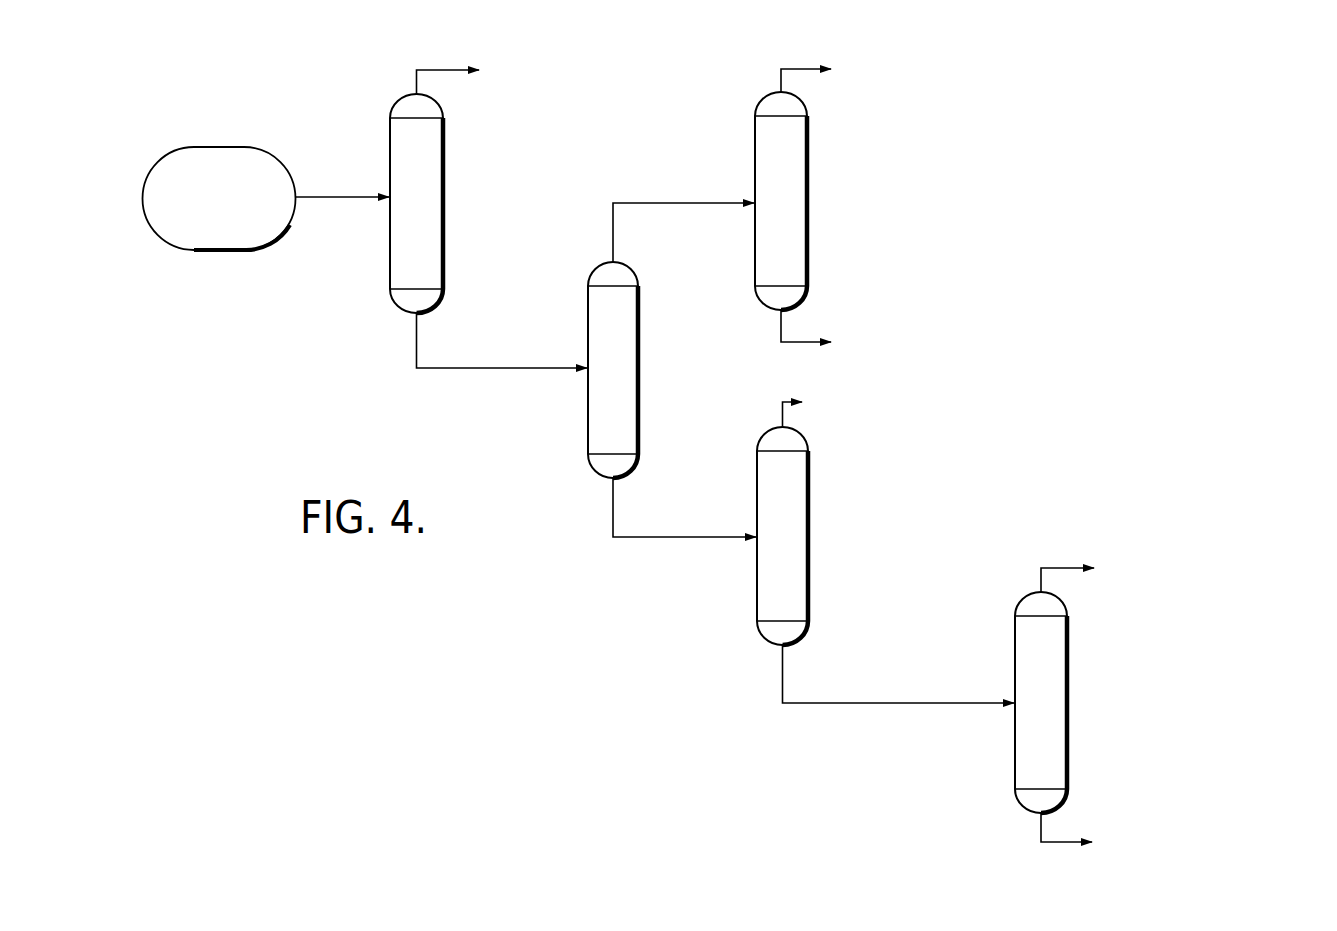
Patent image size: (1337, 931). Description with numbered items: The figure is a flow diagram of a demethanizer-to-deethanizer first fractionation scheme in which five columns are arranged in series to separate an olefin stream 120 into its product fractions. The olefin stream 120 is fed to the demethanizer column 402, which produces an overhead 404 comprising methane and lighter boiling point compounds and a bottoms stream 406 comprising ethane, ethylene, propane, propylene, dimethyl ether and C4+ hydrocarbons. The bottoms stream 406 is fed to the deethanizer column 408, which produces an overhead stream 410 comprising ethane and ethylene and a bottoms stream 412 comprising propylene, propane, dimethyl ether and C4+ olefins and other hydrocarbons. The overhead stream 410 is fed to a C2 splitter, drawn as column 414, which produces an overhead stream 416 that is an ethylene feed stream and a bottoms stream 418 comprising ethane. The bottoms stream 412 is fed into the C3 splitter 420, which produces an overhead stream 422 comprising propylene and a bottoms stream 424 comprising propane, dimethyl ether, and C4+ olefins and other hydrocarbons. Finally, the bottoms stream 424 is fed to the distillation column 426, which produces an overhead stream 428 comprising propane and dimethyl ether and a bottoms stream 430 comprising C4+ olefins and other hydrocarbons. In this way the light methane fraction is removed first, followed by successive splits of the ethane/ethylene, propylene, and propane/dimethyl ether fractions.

The olefin stream 120 is at (342, 198).
The demethanizer column 402 is at (416, 203).
The overhead 404 is at (435, 70).
The bottoms stream 406 is at (452, 368).
The deethanizer column 408 is at (613, 370).
The overhead stream 410 is at (668, 200).
The bottoms stream 412 is at (638, 537).
The ethylene-ethane splitter column 414 is at (781, 201).
The overhead stream 416 is at (798, 69).
The bottoms stream 418 is at (781, 337).
The C3 splitter 420 is at (782, 536).
The overhead stream 422 is at (782, 410).
The bottoms stream 424 is at (858, 705).
The distillation column 426 is at (1041, 702).
The overhead stream 428 is at (1065, 567).
The bottoms stream 430 is at (1055, 845).